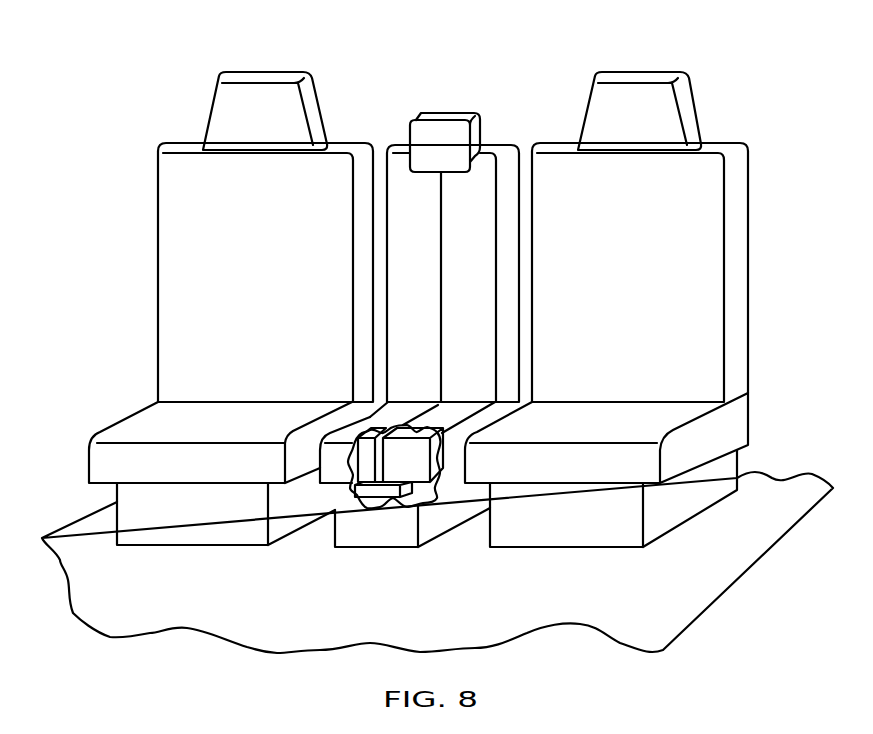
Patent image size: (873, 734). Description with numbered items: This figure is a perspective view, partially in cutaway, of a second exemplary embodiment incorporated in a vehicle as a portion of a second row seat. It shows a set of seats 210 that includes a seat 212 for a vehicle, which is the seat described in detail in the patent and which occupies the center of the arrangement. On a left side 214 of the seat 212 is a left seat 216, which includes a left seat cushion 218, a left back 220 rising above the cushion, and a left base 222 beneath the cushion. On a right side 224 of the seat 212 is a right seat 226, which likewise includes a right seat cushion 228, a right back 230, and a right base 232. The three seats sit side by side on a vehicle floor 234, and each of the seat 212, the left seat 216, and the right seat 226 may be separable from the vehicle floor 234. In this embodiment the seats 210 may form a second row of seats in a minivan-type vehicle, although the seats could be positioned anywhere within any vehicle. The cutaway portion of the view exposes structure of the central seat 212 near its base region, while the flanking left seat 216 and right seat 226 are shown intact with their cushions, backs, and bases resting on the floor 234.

The set of seats 210 is at (386, 82).
The seat 212 is at (497, 129).
The left side 214 is at (450, 467).
The left seat 216 is at (715, 128).
The left seat cushion 218 is at (738, 423).
The left back 220 is at (738, 247).
The left base 222 is at (688, 512).
The right side 224 is at (323, 533).
The right seat 226 is at (191, 131).
The right seat cushion 228 is at (89, 462).
The right back 230 is at (157, 283).
The right base 232 is at (160, 548).
The vehicle floor 234 is at (646, 603).